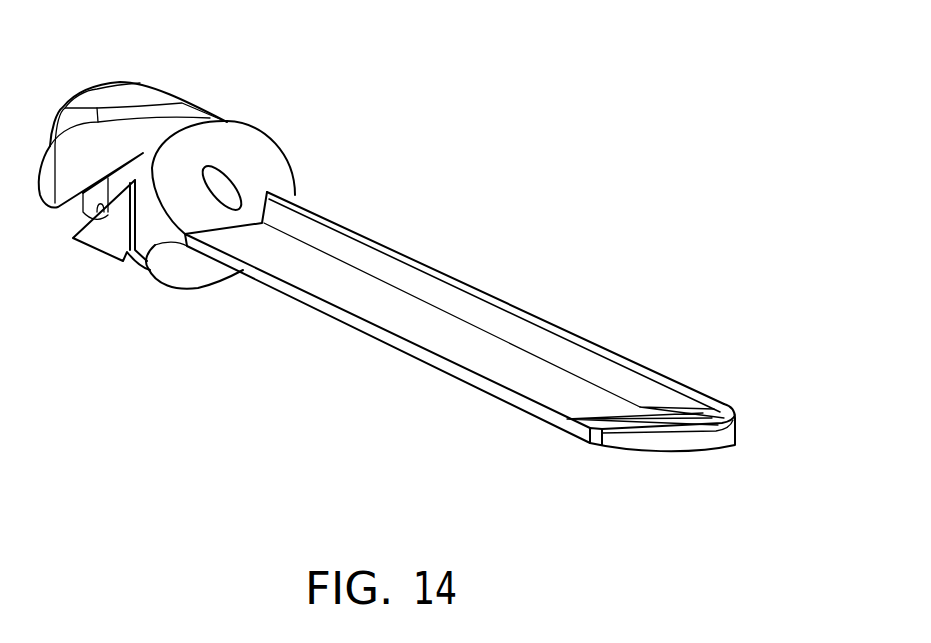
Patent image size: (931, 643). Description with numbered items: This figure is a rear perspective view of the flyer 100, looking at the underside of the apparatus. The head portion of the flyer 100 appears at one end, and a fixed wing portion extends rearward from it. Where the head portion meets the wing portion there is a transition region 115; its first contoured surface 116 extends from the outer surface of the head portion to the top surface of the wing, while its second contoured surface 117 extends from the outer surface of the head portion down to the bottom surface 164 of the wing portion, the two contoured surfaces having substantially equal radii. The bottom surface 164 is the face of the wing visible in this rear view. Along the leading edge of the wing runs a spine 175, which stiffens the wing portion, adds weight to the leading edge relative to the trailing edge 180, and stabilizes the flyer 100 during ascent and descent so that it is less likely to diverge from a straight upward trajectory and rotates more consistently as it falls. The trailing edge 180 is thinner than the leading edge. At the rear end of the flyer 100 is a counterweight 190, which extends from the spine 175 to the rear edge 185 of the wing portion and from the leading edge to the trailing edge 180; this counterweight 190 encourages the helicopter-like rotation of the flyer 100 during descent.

The flyer 100 is at (580, 75).
The transition region 115 is at (219, 149).
The first contoured surface 116 is at (252, 182).
The second contoured surface 117 is at (198, 266).
The trailing edge 180 is at (418, 258).
The spine 175 is at (491, 299).
The bottom surface 164 is at (530, 375).
The counterweight 190 is at (706, 421).
The rear edge 185 is at (710, 450).